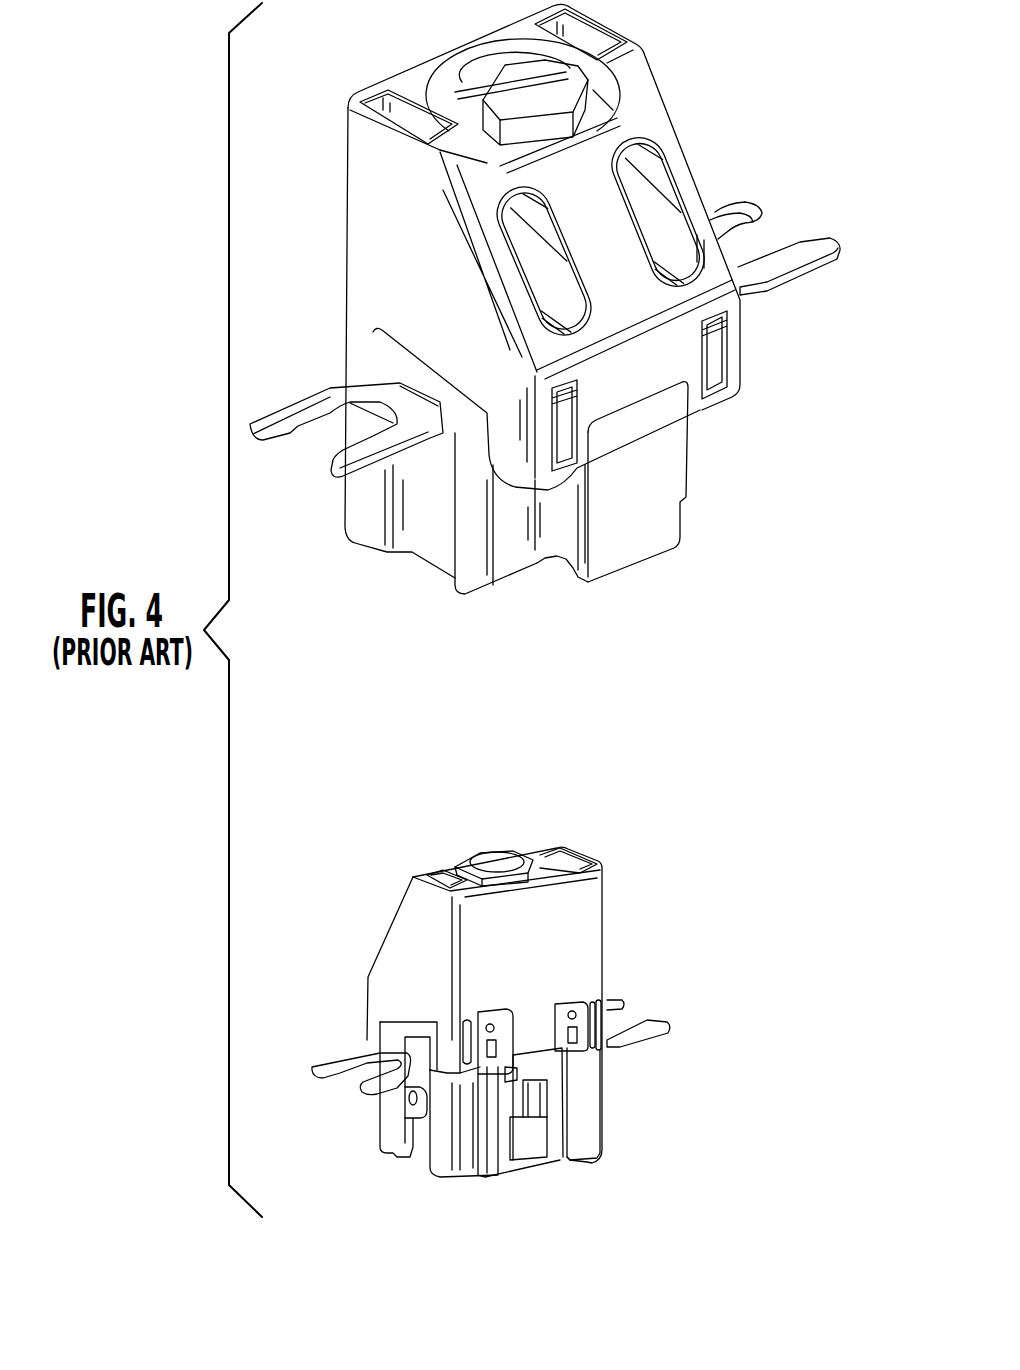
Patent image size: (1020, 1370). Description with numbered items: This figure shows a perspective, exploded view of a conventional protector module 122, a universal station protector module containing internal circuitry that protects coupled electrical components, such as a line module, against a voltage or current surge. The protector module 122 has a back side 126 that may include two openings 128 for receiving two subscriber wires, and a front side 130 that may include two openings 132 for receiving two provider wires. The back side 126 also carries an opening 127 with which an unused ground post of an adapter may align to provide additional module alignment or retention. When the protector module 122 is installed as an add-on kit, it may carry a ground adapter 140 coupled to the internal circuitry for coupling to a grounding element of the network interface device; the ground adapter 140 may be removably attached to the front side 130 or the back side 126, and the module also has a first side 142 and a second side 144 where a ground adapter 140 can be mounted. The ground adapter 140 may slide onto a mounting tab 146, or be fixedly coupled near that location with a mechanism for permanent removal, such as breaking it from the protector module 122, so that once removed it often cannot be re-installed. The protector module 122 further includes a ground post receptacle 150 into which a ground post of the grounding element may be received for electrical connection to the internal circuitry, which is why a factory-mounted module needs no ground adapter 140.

The protector module 122 is at (676, 564).
The back side 126 is at (500, 1137).
The opening 127 is at (540, 1140).
The openings 128 is at (465, 1023).
The front side 130 is at (680, 523).
The openings 132 is at (553, 283).
The ground adapter 140 is at (270, 428).
The first side 142 is at (393, 1153).
The second side 144 is at (440, 542).
The mounting tab 146 is at (412, 1097).
The ground post receptacle 150 is at (573, 562).